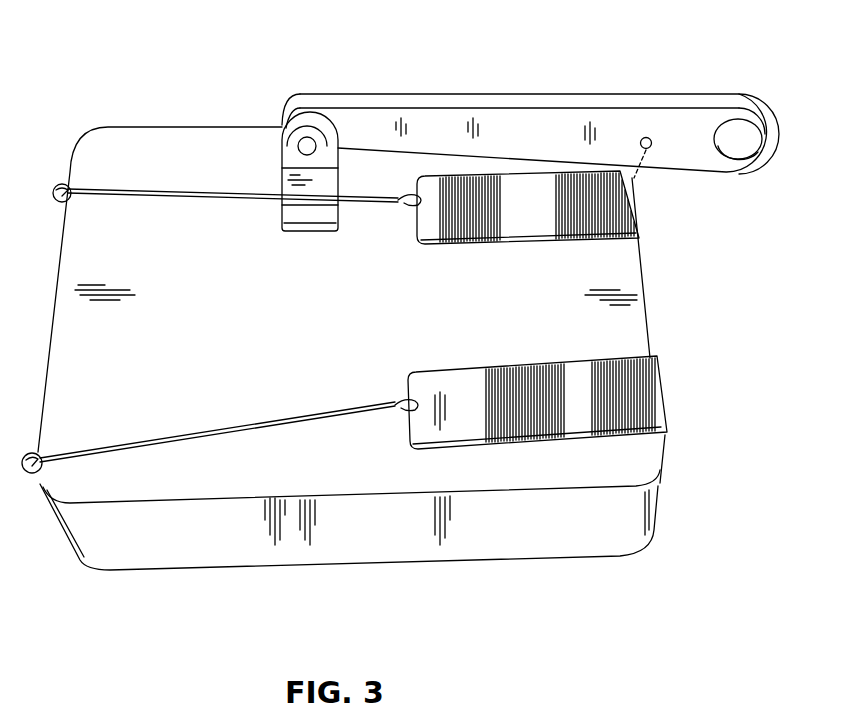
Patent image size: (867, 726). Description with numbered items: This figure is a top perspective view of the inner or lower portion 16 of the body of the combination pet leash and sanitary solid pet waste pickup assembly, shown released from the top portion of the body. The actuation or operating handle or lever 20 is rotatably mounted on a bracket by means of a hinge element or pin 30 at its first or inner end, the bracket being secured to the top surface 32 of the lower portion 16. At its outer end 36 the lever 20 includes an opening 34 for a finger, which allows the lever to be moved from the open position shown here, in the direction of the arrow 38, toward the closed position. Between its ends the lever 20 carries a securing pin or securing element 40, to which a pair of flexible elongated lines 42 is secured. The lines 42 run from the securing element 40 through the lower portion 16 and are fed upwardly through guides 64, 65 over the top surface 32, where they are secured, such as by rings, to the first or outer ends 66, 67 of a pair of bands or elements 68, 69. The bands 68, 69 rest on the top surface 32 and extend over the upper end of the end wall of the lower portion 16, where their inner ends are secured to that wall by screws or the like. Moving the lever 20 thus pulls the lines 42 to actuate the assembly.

The inner or lower portion 16 is at (127, 580).
The actuation or operating handle 20 is at (725, 120).
The hinge element or pin 30 is at (303, 137).
The top surface 32 is at (296, 336).
The opening 34 is at (745, 145).
The outer end 36 is at (782, 118).
The arrow 38 is at (280, 145).
The securing pin 40 is at (648, 137).
The pair of lines 42 is at (213, 202).
The guide 64 is at (30, 451).
The guide 65 is at (62, 182).
The first or outer end 66 is at (413, 222).
The first or outer end 67 is at (400, 387).
The band or element 68 is at (506, 222).
The band or element 69 is at (512, 366).